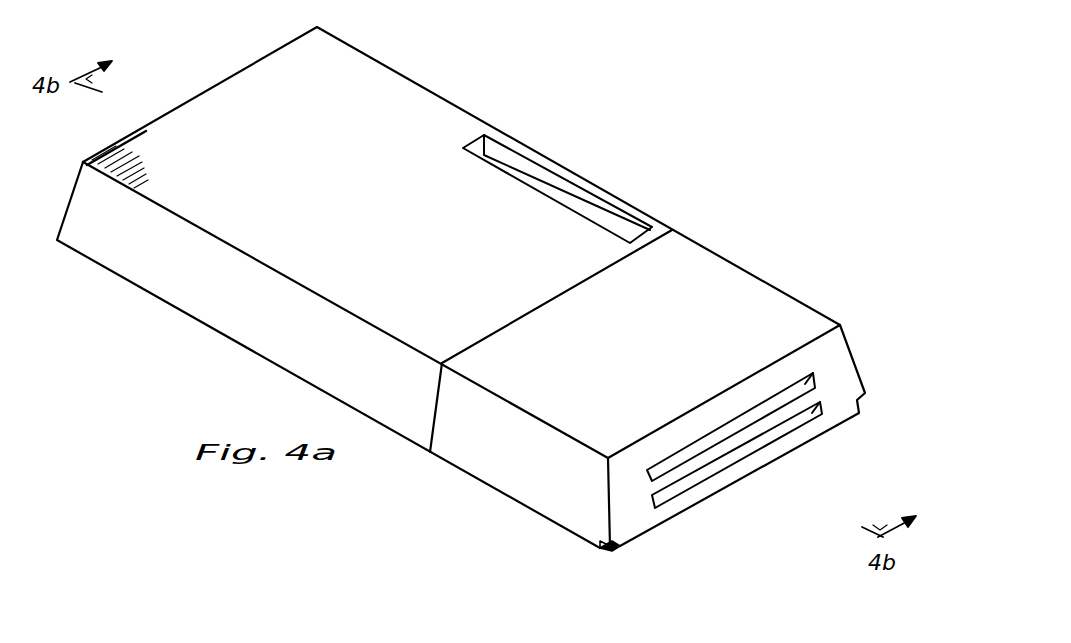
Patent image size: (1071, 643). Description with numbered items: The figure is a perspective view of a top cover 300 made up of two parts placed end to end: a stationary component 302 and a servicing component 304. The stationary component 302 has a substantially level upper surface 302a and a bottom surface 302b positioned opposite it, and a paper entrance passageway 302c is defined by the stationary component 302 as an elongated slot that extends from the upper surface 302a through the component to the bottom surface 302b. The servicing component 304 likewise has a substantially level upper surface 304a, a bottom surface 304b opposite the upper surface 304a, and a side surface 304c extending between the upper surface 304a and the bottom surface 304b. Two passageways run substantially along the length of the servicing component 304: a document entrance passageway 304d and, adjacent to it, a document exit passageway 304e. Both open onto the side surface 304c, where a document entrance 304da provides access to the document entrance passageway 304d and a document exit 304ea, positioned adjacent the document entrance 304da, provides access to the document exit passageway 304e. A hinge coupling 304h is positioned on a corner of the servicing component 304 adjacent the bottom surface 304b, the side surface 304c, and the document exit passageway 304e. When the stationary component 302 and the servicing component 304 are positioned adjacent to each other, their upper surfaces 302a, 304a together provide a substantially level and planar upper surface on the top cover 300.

The top cover 300 is at (645, 130).
The stationary component 302 is at (425, 87).
The upper surface 302a is at (213, 100).
The bottom surface 302b is at (188, 314).
The paper entrance passageway 302c is at (541, 175).
The servicing component 304 is at (780, 287).
The upper surface 304a is at (710, 262).
The bottom surface 304b is at (500, 497).
The side surface 304c is at (838, 415).
The document entrance passageway 304d is at (743, 425).
The document entrance 304da is at (707, 430).
The document exit passageway 304e is at (707, 475).
The document exit 304ea is at (682, 493).
The hinge coupling 304h is at (612, 552).